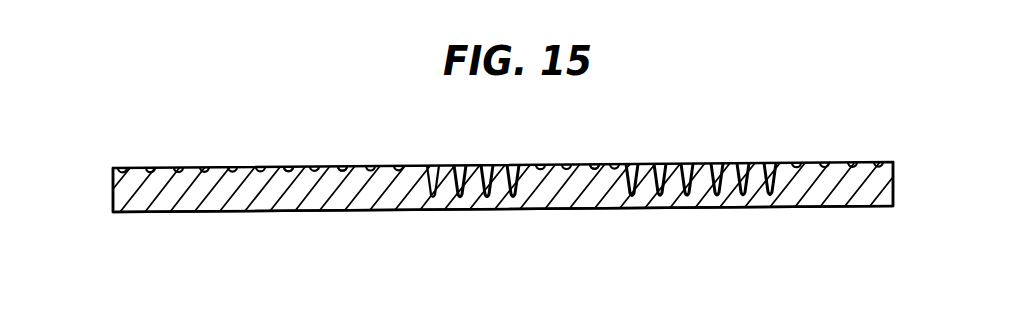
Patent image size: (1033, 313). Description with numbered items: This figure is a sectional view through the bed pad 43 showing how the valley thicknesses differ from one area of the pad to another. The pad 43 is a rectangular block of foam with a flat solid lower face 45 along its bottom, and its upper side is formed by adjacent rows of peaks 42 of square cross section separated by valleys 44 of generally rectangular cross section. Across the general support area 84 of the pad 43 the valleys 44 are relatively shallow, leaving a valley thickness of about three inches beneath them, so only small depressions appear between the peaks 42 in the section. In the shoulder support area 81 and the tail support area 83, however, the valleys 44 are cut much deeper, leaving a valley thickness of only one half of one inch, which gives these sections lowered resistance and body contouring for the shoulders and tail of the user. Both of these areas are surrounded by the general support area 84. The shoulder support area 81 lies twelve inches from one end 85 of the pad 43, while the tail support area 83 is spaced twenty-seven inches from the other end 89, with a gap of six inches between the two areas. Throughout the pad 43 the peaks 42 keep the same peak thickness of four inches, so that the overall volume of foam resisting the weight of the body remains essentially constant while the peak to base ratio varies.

The peaks 42 is at (337, 166).
The pad 43 is at (755, 208).
The valleys 44 is at (298, 167).
The flat solid lower face 45 is at (530, 210).
The shoulder support area 81 is at (665, 160).
The tail support area 83 is at (480, 165).
The general support area 84 is at (251, 165).
The one end 85 is at (893, 166).
The other end 89 is at (113, 195).